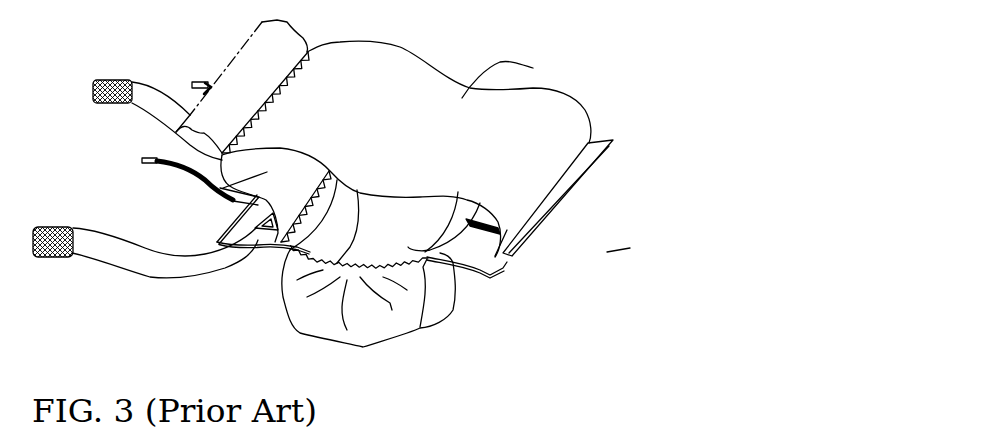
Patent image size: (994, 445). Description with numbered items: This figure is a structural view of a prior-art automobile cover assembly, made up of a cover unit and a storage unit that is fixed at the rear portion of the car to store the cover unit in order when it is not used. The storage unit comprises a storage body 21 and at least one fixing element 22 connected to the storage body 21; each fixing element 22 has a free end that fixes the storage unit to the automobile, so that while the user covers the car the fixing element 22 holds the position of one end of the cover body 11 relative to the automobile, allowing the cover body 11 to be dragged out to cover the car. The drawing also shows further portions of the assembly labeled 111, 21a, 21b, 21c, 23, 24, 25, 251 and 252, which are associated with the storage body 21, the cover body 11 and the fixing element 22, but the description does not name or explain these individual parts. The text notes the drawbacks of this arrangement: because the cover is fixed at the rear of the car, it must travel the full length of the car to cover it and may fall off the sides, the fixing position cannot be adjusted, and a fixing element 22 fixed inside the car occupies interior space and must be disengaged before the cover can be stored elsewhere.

The cover body 11 is at (533, 68).
The slot 111 is at (230, 200).
The storage body 21 is at (582, 296).
The pouch opening 21a is at (480, 273).
The pouch strap 21b is at (253, 233).
The pouch bottom 21c is at (380, 323).
The fixing element 22 is at (157, 110).
The insert plate 23 is at (547, 220).
The flap 24 is at (227, 238).
The fastener 25 is at (634, 251).
The first fastener part 251 is at (180, 167).
The second fastener part 252 is at (513, 249).